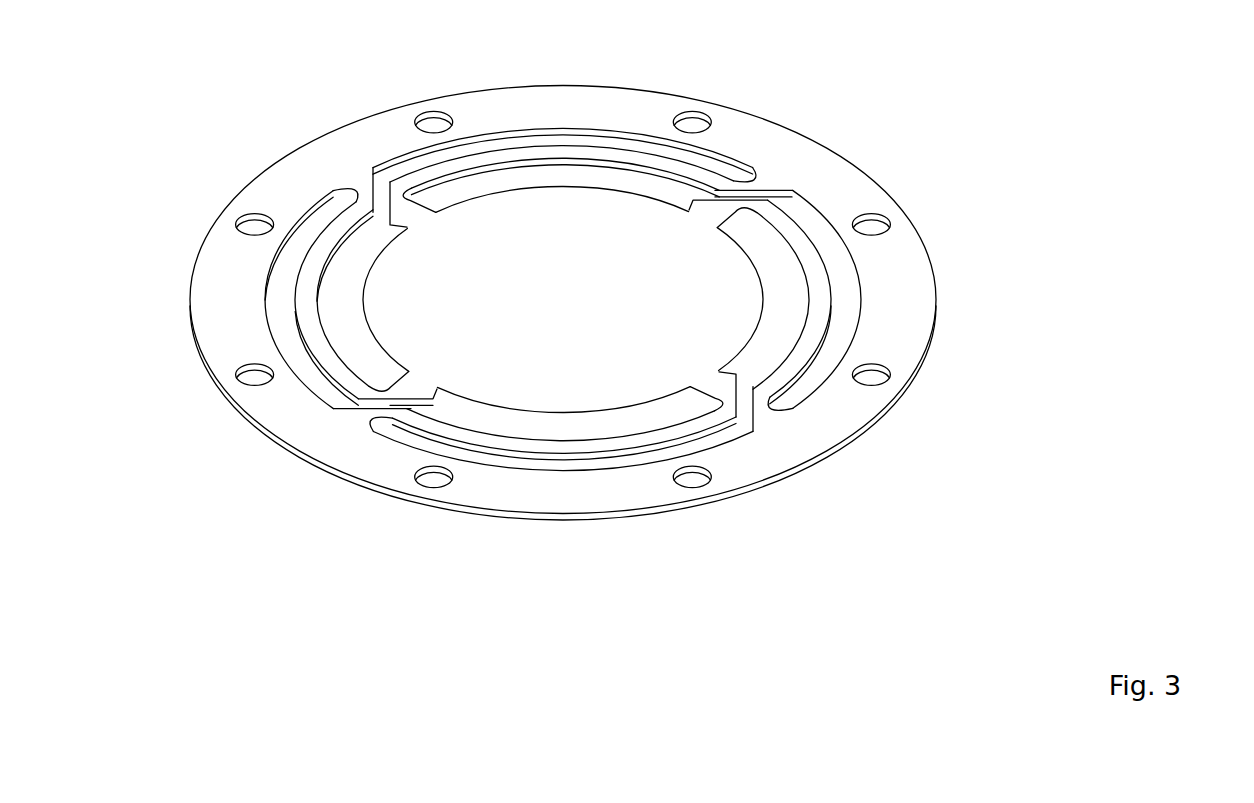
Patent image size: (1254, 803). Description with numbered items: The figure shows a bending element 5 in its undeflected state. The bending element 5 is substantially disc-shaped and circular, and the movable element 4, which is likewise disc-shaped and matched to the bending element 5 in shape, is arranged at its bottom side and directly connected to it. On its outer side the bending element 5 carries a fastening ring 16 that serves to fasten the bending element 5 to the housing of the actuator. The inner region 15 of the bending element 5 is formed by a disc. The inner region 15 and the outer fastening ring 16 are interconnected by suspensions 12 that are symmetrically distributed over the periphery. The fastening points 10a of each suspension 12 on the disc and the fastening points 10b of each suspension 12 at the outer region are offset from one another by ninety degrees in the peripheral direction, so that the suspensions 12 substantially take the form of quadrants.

The bending element 5 is at (866, 120).
The movable element 4 is at (733, 362).
The fastening points of the suspension on the disc 10a is at (355, 183).
The fastening points of the suspension at the outer region 10b is at (413, 386).
The suspension 12 is at (325, 353).
The inner region 15 is at (643, 355).
The fastening ring 16 is at (538, 497).